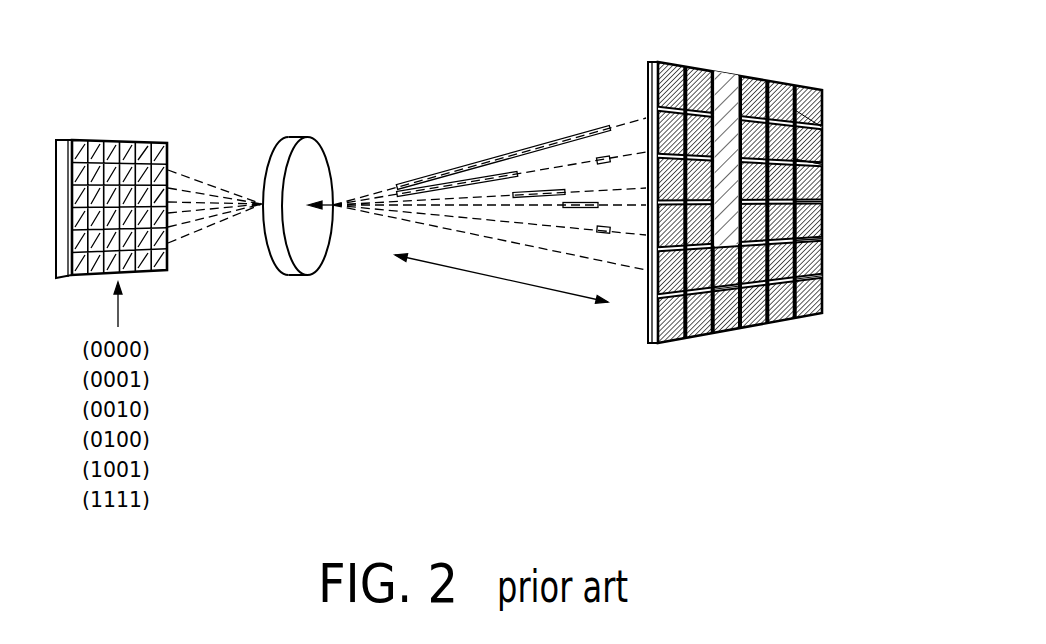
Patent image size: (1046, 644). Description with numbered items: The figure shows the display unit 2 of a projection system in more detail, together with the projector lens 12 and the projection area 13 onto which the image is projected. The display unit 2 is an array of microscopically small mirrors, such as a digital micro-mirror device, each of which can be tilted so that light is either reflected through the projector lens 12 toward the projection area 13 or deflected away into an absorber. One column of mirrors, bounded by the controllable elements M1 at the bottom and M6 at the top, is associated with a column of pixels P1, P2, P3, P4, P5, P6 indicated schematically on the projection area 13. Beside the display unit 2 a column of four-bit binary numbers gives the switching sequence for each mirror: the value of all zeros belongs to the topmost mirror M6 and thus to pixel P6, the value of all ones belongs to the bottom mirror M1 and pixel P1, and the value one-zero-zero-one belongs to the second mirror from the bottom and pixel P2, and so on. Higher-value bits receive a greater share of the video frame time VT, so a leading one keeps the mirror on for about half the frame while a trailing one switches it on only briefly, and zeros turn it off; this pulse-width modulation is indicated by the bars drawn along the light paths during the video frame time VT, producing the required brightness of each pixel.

The display unit 2 is at (113, 200).
The controllable element M6 is at (93, 140).
The controllable element M1 is at (112, 289).
The projector lens 12 is at (308, 136).
The video frame time VT is at (463, 273).
The projection area 13 is at (760, 206).
The pixel P1 is at (733, 72).
The pixel P2 is at (822, 134).
The pixel P3 is at (822, 180).
The pixel P4 is at (822, 228).
The pixel P5 is at (822, 262).
The pixel P6 is at (730, 330).